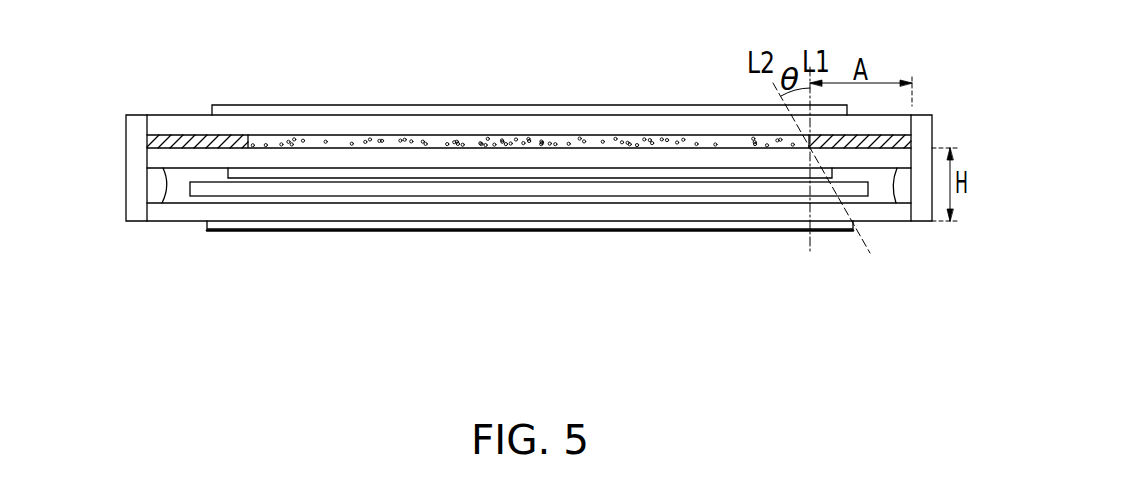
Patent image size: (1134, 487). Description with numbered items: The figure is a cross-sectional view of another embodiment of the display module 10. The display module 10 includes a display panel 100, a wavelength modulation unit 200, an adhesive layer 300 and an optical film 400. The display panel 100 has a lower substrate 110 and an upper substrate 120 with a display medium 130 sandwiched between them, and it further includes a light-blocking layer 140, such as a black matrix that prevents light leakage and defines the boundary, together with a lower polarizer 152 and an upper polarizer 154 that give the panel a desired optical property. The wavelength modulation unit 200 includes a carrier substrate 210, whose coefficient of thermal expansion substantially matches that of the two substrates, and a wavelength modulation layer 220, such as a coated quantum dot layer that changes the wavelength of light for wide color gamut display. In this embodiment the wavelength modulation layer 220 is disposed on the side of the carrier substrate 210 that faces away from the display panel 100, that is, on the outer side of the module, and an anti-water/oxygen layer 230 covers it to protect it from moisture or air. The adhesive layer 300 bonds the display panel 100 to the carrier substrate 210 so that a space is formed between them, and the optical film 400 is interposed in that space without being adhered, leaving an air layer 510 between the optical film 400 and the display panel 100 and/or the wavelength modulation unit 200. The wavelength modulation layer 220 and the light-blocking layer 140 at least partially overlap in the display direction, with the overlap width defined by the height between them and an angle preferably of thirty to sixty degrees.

The display module 10 is at (153, 47).
The display panel 100 is at (529, 89).
The lower substrate 110 is at (529, 117).
The upper substrate 120 is at (597, 128).
The display medium 130 is at (620, 140).
The light-blocking layer 140 is at (907, 142).
The lower polarizer 152 is at (295, 174).
The upper polarizer 154 is at (368, 110).
The wavelength modulation unit 200 is at (529, 281).
The carrier substrate 210 is at (290, 208).
The wavelength modulation layer 220 is at (288, 316).
The anti-water/oxygen layer 230 is at (592, 232).
The adhesive layer 300 is at (125, 142).
The optical film 400 is at (198, 191).
The air layer 510 is at (520, 180).